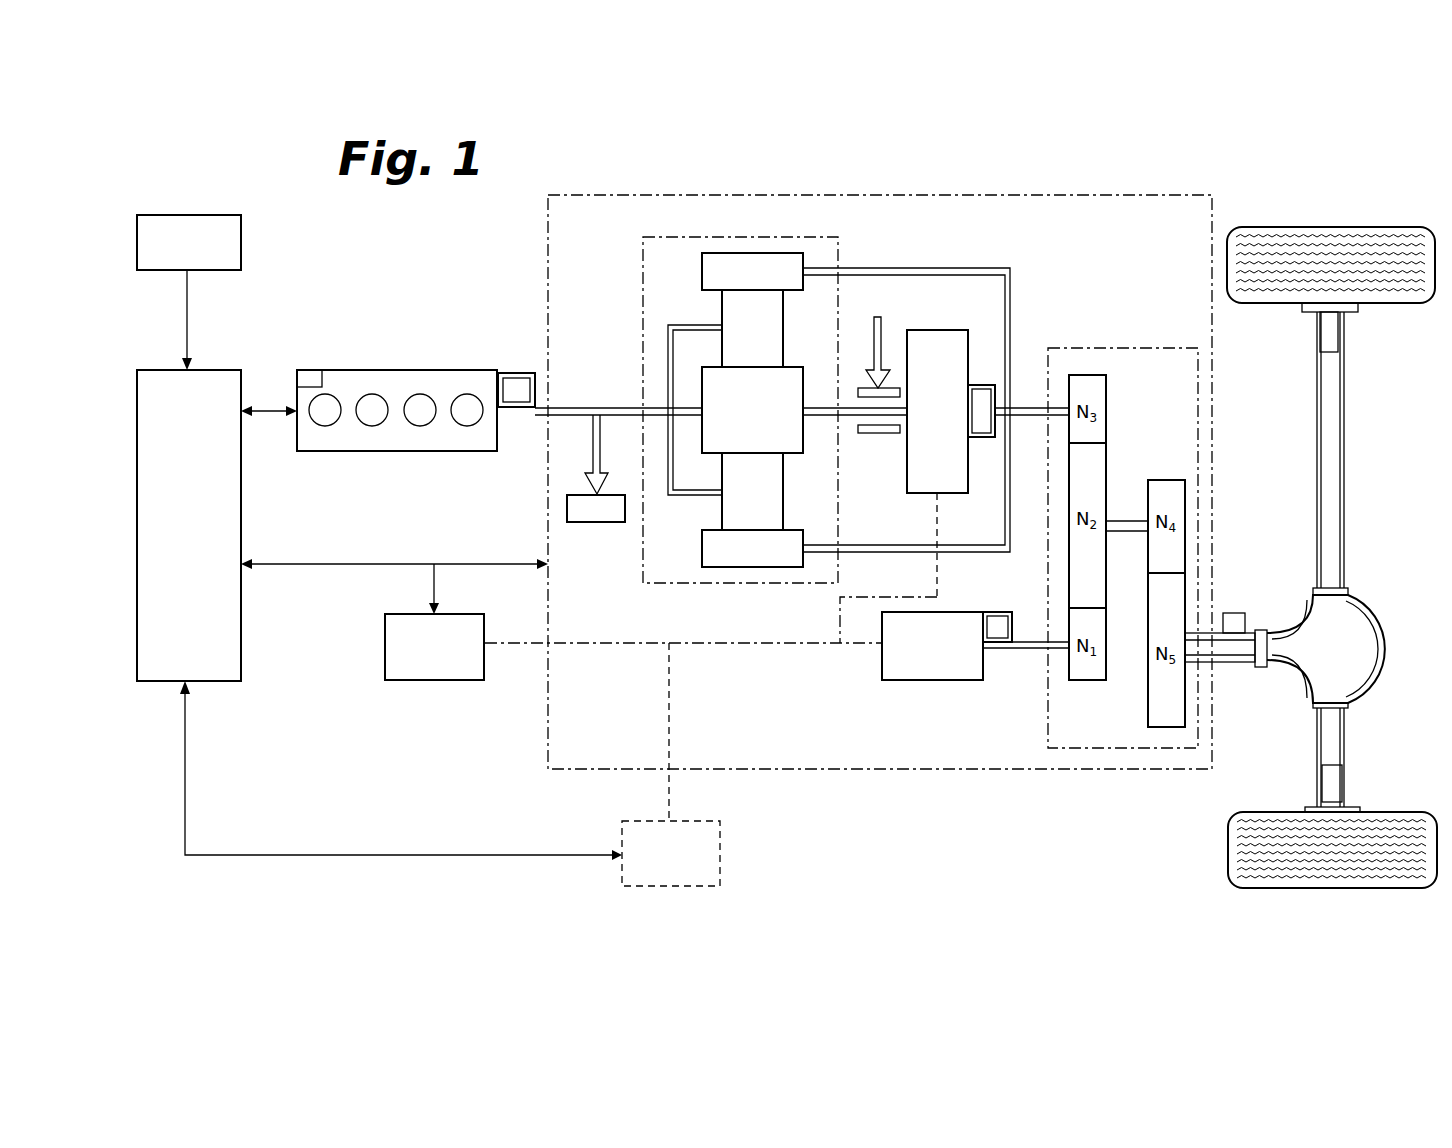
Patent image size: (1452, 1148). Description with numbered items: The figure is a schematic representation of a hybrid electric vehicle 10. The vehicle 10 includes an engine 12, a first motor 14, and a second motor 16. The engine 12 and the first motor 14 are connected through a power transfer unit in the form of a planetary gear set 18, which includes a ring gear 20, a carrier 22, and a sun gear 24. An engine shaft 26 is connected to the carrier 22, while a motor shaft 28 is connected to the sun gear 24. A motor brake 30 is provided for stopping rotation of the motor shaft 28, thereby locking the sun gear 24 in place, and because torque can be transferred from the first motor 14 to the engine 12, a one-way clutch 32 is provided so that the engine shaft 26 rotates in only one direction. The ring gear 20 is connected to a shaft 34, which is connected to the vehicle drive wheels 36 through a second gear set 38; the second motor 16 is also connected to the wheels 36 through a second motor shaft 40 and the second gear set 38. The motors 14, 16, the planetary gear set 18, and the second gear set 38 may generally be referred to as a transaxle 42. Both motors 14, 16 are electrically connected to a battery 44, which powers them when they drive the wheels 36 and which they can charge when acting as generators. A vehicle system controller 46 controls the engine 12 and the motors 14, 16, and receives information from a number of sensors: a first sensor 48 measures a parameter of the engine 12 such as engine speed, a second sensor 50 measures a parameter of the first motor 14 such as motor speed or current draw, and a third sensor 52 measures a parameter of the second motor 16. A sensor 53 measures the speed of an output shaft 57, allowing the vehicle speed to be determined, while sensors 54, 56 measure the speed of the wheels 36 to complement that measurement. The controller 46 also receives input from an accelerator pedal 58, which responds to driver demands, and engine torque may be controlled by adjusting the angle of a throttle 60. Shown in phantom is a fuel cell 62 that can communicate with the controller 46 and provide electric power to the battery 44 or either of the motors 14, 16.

The vehicle 10 is at (1039, 848).
The engine 12 is at (397, 370).
The first motor 14 is at (937, 330).
The second motor 16 is at (913, 680).
The planetary gear set 18 is at (662, 232).
The ring gear 20 is at (745, 253).
The carrier 22 is at (783, 340).
The sun gear 24 is at (700, 385).
The engine shaft 26 is at (518, 415).
The motor shaft 28 is at (828, 418).
The motor brake 30 is at (862, 386).
The one-way clutch 32 is at (567, 508).
The shaft 34 is at (1027, 405).
The vehicle drive wheels 36 is at (1383, 220).
The second gear set 38 is at (1210, 441).
The second motor shaft 40 is at (1030, 650).
The transaxle 42 is at (1191, 185).
The battery 44 is at (420, 681).
The vehicle system controller 46 is at (241, 508).
The first sensor 48 is at (515, 373).
The second sensor 50 is at (982, 385).
The third sensor 52 is at (1000, 615).
The sensor 53 is at (1237, 613).
The sensor 54 is at (1340, 340).
The sensor 56 is at (1322, 780).
The output shaft 57 is at (1233, 665).
The accelerator pedal 58 is at (241, 245).
The throttle 60 is at (307, 370).
The fuel cell 62 is at (720, 862).